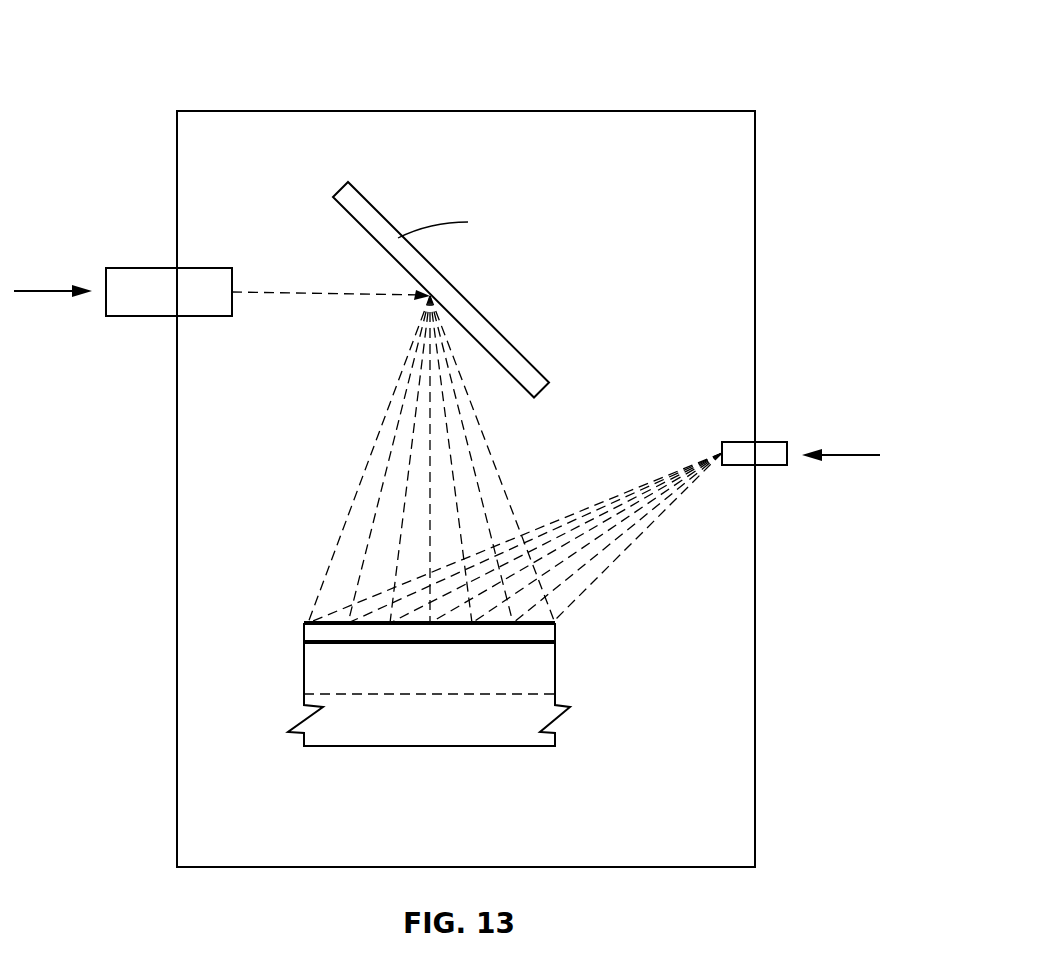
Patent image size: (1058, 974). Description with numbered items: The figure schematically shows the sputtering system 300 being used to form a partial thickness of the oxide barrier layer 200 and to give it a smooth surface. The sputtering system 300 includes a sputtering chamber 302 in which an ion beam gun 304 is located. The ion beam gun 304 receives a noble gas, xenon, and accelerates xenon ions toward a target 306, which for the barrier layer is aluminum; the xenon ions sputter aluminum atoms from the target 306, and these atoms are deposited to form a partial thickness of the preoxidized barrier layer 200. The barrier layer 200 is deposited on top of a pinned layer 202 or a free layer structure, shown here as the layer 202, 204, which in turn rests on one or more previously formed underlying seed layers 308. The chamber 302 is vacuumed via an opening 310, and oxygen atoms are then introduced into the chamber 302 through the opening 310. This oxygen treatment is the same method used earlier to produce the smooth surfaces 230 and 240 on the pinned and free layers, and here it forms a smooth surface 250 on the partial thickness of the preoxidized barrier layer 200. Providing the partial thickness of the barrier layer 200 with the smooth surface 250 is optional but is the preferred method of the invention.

The sputtering system 300 is at (622, 88).
The sputtering chamber 302 is at (754, 767).
The ion beam gun 304 is at (131, 316).
The target 306 is at (508, 340).
The opening 310 is at (772, 465).
The barrier layer 200 is at (555, 632).
The pinned layer 202 is at (489, 694).
The substrate (F) 204 is at (555, 674).
The seed layers 308 is at (518, 746).
The smooth surface 250 is at (377, 623).
The smooth surface 230 is at (260, 592).
The smooth surface 240 is at (333, 642).